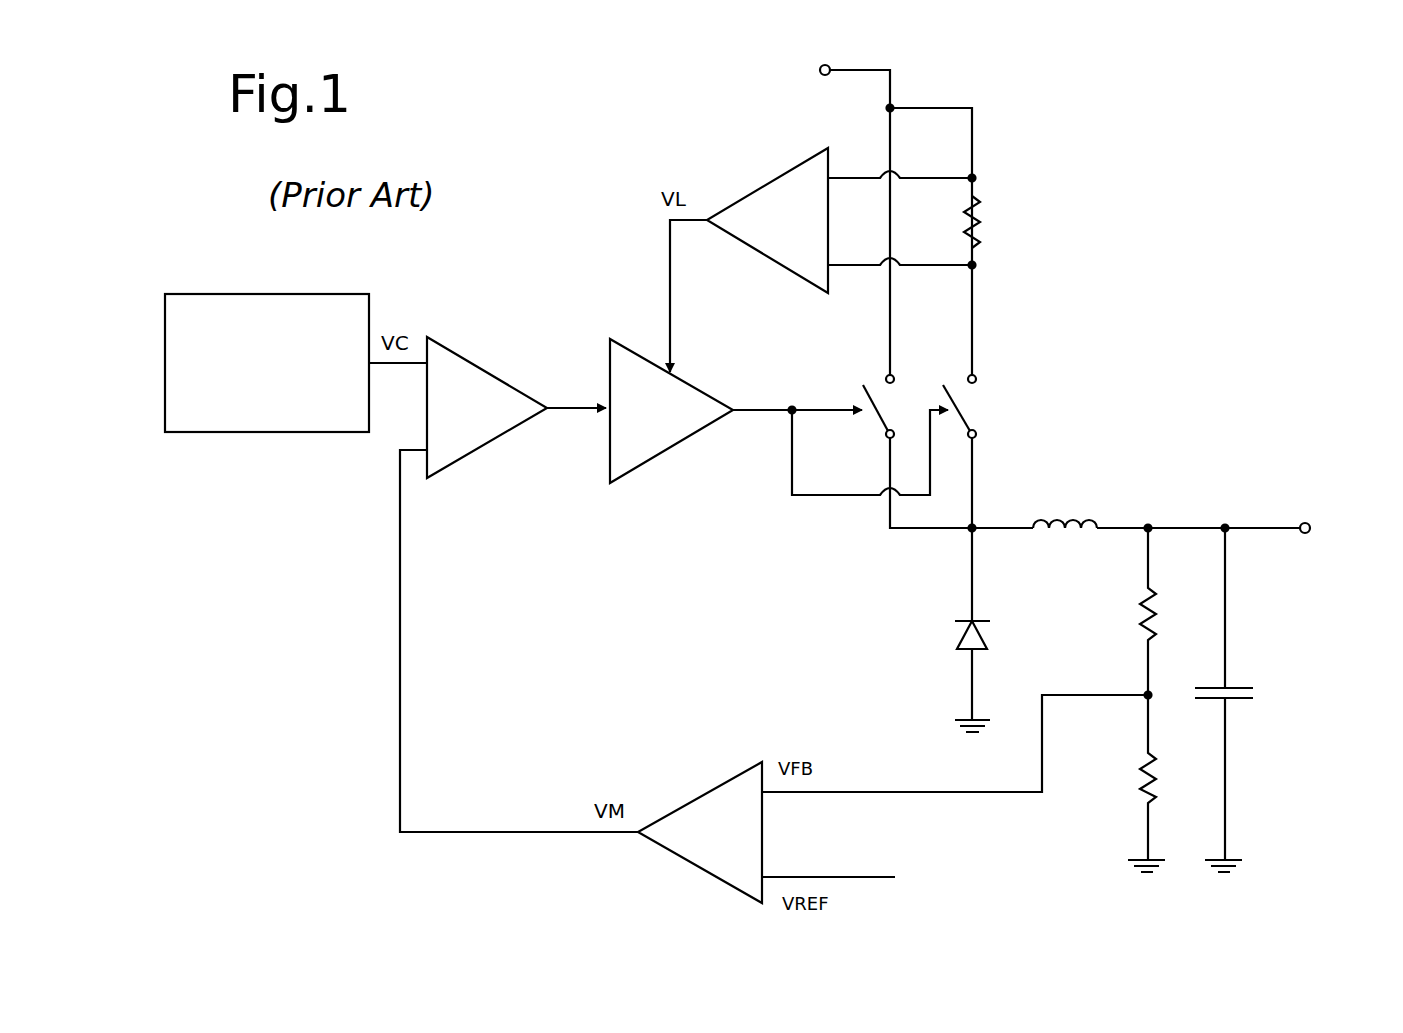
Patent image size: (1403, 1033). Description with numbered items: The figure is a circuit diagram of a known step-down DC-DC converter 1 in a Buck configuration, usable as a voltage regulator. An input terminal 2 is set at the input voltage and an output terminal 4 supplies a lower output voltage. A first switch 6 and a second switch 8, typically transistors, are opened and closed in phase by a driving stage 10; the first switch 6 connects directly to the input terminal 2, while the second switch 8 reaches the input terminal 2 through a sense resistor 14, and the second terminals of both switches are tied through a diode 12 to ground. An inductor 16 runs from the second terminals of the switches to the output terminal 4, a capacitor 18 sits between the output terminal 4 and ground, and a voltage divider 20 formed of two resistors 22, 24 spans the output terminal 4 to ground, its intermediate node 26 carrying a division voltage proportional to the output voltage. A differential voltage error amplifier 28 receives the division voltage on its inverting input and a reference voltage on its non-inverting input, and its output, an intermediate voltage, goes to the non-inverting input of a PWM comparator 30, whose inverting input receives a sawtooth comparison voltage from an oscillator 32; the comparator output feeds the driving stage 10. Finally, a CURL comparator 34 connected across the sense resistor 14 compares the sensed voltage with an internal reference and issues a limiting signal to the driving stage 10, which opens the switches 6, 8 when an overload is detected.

The step-down DC-DC converter 1 is at (1333, 182).
The input terminal 2 is at (820, 67).
The output terminal 4 is at (1310, 534).
The first switch 6 is at (866, 386).
The second switch 8 is at (958, 390).
The driving stage 10 is at (646, 438).
The diode 12 is at (958, 633).
The sense resistor 14 is at (982, 222).
The inductor 16 is at (1052, 536).
The capacitor 18 is at (1243, 688).
The voltage divider 20 is at (1193, 626).
The resistor 22 is at (1138, 596).
The resistor 24 is at (1138, 772).
The intermediate node 26 is at (1146, 698).
The differential voltage error amplifier 28 is at (716, 798).
The PWM comparator 30 is at (496, 388).
The oscillator 32 is at (303, 430).
The CURL comparator 34 is at (760, 204).